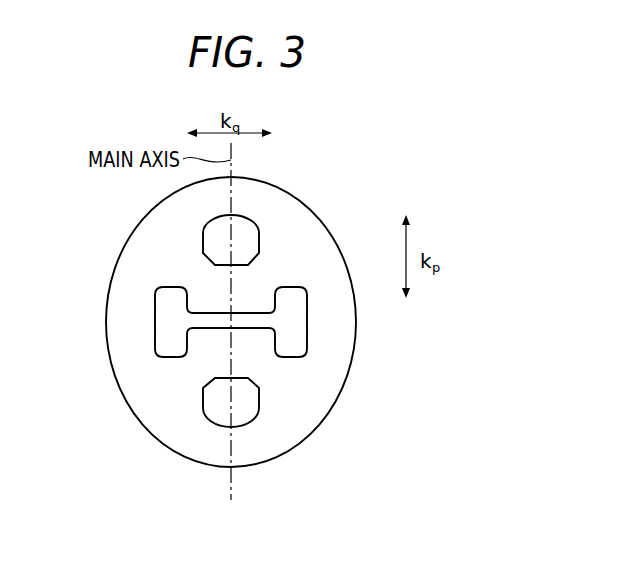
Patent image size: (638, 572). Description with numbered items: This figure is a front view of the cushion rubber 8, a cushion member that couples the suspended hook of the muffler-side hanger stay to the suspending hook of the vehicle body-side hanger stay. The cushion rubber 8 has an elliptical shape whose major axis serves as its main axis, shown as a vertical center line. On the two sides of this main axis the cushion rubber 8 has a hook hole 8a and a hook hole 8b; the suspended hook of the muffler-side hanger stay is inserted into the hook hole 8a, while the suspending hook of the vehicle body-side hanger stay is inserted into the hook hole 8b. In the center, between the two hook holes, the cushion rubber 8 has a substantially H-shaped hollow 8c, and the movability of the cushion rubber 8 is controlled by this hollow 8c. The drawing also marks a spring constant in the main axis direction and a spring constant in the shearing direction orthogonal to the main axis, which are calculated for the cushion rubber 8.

The cushion rubber 8 is at (352, 360).
The hook hole 8a is at (243, 412).
The hook hole 8b is at (243, 232).
The hollow 8c is at (167, 334).